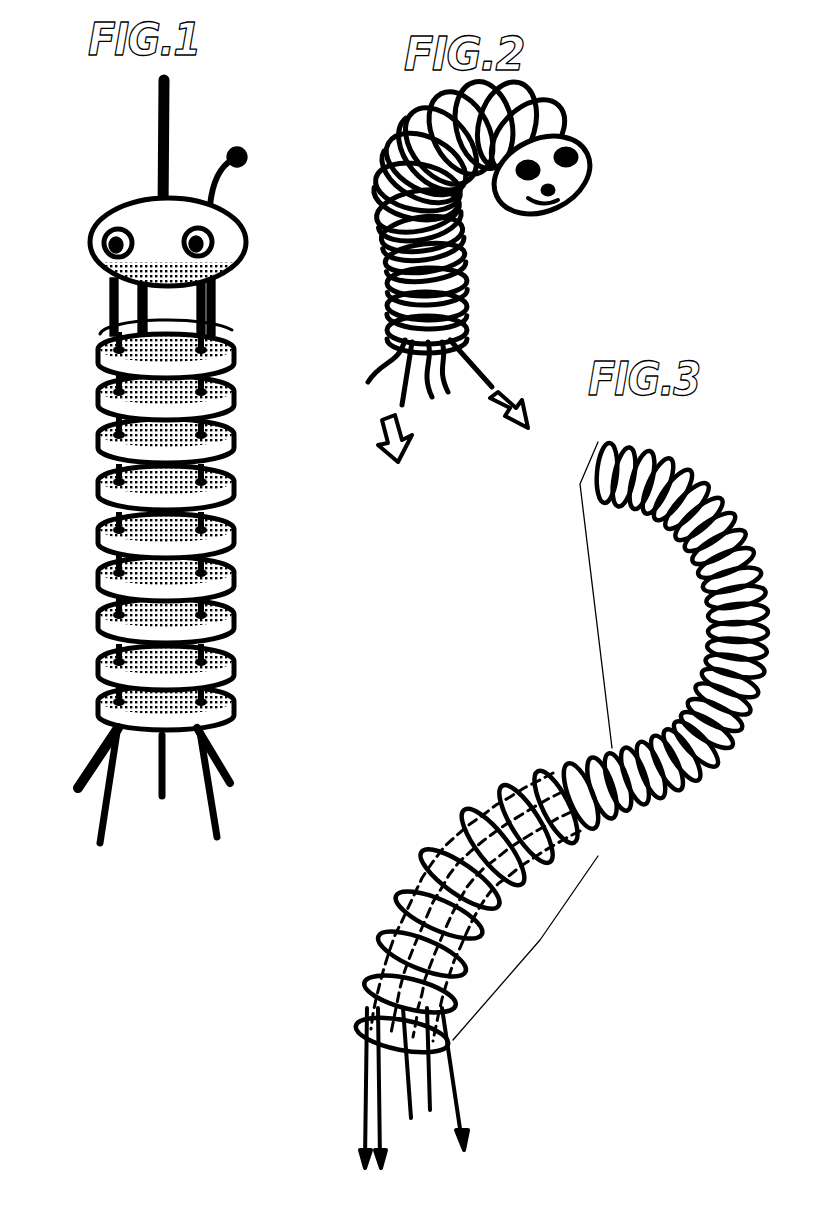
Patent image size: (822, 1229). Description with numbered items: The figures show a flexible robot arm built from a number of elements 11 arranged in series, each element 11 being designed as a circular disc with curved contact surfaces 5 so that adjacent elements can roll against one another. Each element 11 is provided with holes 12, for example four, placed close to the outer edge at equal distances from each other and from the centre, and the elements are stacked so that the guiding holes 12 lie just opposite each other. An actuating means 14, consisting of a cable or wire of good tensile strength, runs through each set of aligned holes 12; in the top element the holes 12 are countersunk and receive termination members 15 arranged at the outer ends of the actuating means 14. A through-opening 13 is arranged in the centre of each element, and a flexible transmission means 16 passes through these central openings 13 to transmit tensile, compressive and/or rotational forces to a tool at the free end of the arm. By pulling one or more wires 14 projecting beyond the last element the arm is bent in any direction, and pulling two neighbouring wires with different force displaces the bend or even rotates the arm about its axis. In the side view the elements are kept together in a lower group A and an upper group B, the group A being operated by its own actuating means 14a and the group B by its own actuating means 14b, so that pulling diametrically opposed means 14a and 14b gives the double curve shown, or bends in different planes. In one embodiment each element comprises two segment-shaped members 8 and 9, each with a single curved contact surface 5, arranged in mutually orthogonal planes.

In FIG. 1, the curved contact surface 5 is at (220, 396).
In FIG. 1, the segment-shaped member 8 is at (150, 357).
In FIG. 3, the segment-shaped member 8 is at (722, 737).
In FIG. 1, the segment-shaped member 9 is at (232, 415).
In FIG. 3, the segment-shaped member 9 is at (704, 768).
In FIG. 1, the element 11 is at (100, 500).
In FIG. 2, the element 11 is at (465, 222).
In FIG. 3, the element 11 is at (706, 593).
In FIG. 1, the hole 12 is at (128, 202).
In FIG. 1, the through-opening 13 is at (102, 330).
In FIG. 1, the actuating means 14 is at (210, 180).
In FIG. 2, the actuating means 14 is at (404, 388).
In FIG. 3, the actuating means 14a is at (362, 1070).
In FIG. 3, the actuating means 14b is at (378, 1102).
In FIG. 1, the termination member 15 is at (242, 160).
In FIG. 1, the flexible transmission means 16 is at (170, 110).
In FIG. 2, the flexible transmission means 16 is at (435, 352).
In FIG. 3, the lower group A is at (525, 948).
In FIG. 3, the upper group B is at (588, 601).